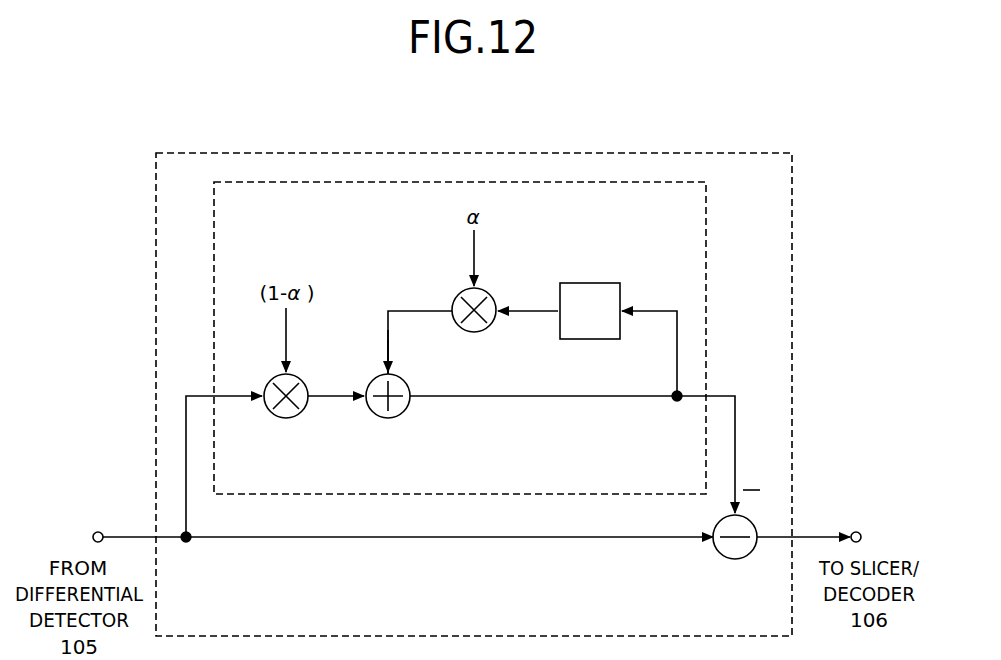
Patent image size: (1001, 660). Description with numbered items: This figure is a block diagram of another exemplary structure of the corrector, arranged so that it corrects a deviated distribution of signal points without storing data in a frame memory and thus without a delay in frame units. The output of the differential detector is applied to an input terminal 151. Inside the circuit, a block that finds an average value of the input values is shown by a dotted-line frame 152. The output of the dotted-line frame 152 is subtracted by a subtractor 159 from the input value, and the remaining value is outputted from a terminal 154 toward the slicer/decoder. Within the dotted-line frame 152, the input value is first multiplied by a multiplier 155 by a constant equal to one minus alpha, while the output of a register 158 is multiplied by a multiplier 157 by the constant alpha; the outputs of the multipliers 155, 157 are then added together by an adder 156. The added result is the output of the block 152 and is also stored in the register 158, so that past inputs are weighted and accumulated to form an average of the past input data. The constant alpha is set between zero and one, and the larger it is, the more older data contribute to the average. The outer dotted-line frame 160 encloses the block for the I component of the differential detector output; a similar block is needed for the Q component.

The input terminal 151 is at (95, 532).
The dotted-line frame 152 is at (707, 242).
The terminal 154 is at (861, 532).
The multiplier 155 is at (287, 418).
The adder 156 is at (393, 418).
The multiplier 157 is at (460, 298).
The register 158 is at (590, 283).
The subtractor 159 is at (733, 559).
The dotted-line frame 160 is at (794, 182).